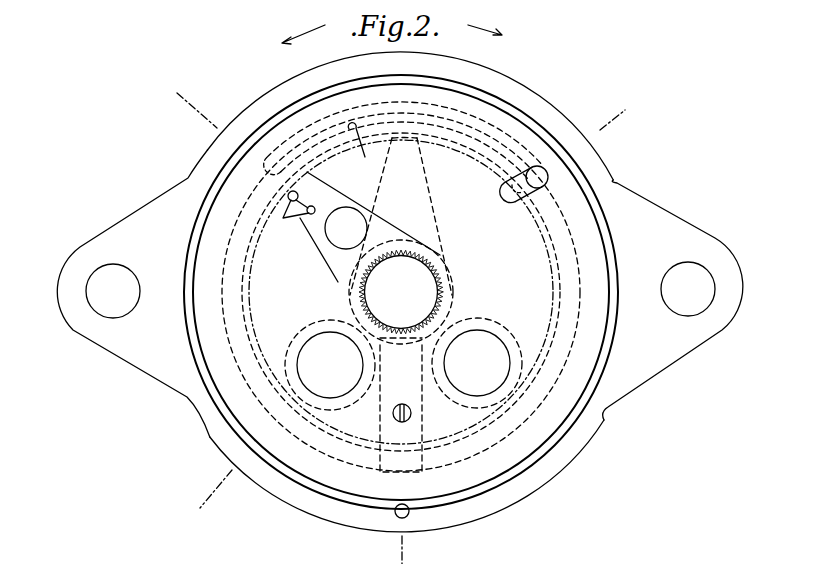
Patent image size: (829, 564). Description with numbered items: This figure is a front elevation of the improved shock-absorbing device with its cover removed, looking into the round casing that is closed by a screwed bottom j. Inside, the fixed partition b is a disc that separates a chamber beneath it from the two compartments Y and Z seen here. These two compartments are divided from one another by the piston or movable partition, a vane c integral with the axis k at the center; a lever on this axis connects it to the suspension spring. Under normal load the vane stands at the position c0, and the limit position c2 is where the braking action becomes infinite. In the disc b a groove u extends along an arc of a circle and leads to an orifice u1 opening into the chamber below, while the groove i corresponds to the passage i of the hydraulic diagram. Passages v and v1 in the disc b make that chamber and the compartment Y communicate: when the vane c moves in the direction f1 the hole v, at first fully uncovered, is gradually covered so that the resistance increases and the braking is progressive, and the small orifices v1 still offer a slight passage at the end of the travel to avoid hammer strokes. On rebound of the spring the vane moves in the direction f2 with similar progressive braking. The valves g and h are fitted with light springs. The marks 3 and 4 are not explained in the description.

The section line 3- 3 is at (184, 107).
The section line 4- 4 is at (420, 309).
The direction of vane movement f1 is at (303, 26).
The direction of vane movement on rebound f2 is at (485, 17).
The groove u is at (361, 153).
The orifice u1 is at (515, 202).
The groove i is at (456, 141).
The vane c is at (383, 216).
The normal position of vane c0 is at (432, 205).
The limit position of piston c2 is at (316, 256).
The passage v is at (346, 228).
The orifices v1 is at (293, 219).
The axis k is at (401, 292).
The valve g is at (330, 365).
The valve h is at (477, 363).
The screwed bottom j is at (378, 397).
The compartment Y is at (401, 292).
The compartment Z is at (401, 292).
The fixed partition b is at (401, 292).